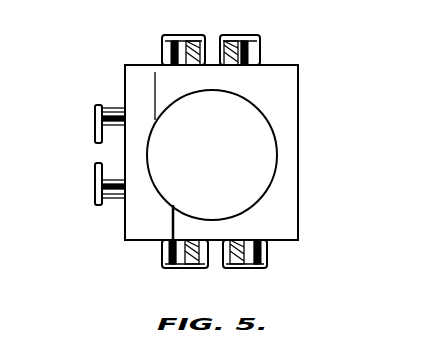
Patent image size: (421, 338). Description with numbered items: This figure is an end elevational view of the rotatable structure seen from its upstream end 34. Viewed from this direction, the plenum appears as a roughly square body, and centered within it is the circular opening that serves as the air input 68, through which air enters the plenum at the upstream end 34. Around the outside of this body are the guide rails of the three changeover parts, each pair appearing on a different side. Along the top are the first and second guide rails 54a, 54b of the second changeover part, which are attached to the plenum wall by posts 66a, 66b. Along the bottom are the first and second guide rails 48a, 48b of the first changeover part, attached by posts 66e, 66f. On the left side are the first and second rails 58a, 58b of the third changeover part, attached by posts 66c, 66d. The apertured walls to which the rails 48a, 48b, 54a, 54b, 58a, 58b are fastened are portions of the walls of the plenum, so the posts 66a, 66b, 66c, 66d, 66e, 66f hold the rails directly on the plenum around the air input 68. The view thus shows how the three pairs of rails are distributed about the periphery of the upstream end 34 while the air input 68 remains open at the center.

The upstream end 34 is at (276, 89).
The air input 68 is at (271, 156).
The first guide rail 54a is at (240, 34).
The second guide rail 54b is at (197, 34).
The first guide rail 48a is at (256, 268).
The second guide rail 48b is at (172, 268).
The first rail 58a is at (95, 137).
The second rail 58b is at (95, 179).
The post 66a is at (262, 50).
The post 66b is at (165, 48).
The post 66c is at (110, 107).
The post 66d is at (110, 200).
The post 66e is at (165, 250).
The post 66f is at (265, 253).